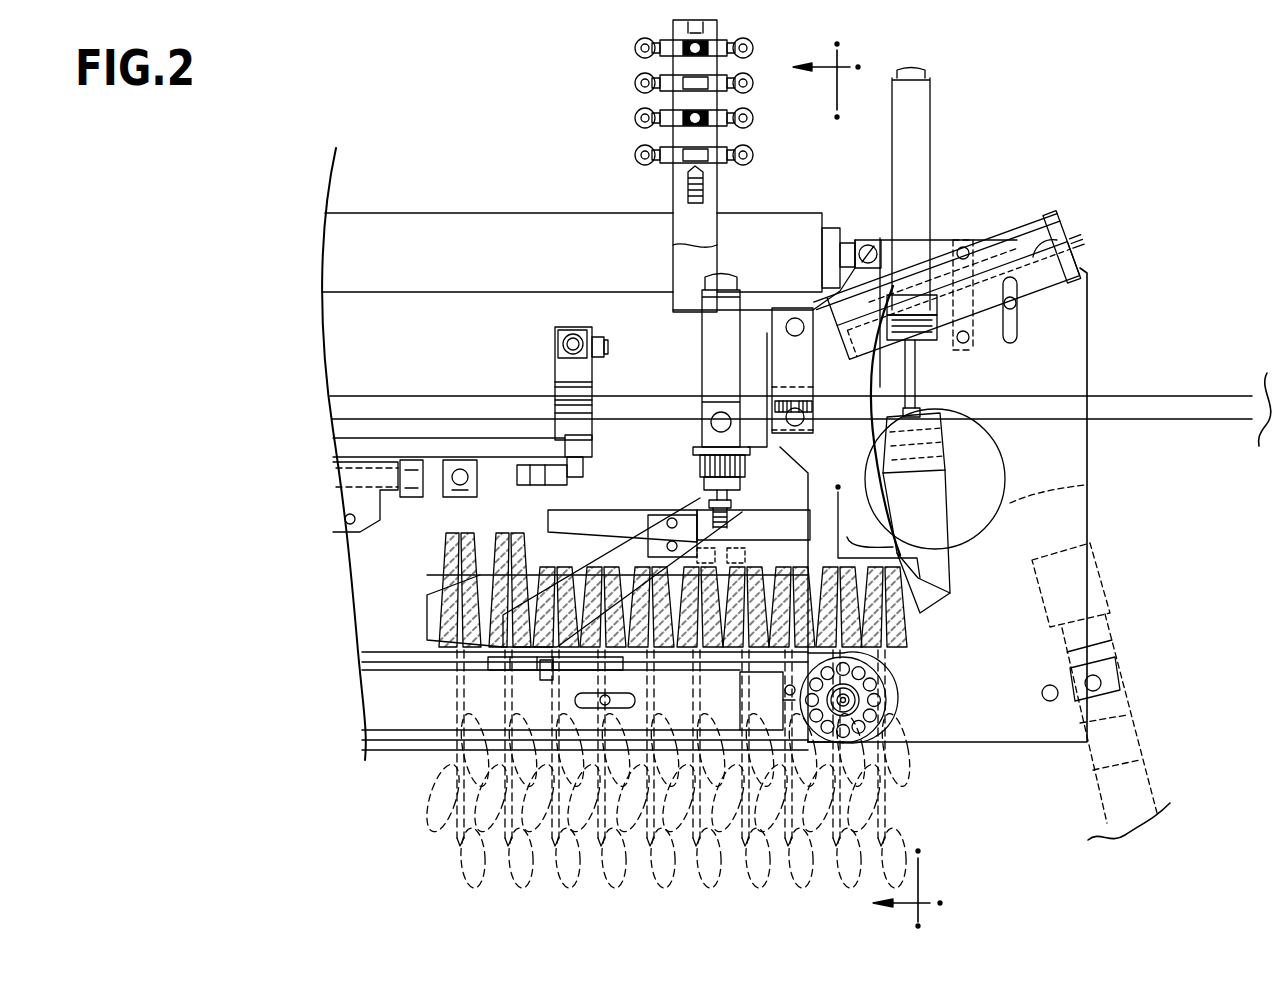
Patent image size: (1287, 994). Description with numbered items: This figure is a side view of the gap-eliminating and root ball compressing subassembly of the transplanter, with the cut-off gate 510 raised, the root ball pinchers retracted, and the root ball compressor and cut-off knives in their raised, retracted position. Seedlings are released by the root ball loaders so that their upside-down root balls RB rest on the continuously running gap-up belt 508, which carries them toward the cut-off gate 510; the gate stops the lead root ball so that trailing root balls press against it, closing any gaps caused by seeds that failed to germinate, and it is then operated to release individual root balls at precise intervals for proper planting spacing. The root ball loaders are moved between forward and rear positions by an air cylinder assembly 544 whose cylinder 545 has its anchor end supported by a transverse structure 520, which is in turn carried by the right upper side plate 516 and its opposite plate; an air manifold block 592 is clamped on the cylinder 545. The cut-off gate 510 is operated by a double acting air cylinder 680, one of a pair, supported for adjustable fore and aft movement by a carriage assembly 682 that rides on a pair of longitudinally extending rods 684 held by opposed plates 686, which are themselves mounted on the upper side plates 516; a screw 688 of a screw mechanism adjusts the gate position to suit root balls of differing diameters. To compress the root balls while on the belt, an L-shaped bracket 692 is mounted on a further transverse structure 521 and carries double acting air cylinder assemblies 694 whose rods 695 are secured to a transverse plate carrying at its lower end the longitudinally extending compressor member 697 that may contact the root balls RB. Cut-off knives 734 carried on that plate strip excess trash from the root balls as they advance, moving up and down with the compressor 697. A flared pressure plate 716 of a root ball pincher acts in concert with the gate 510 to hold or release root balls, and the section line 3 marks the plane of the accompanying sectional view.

The section line 3- 3 is at (880, 480).
The air cylinder assembly 544 is at (475, 178).
The air manifold block 592 is at (681, 28).
The cylinder 545 is at (750, 226).
The transverse structure 520 is at (866, 238).
The double acting air cylinder 680 is at (920, 98).
The carriage assembly 682 is at (973, 213).
The longitudinally extending rods 684 is at (1035, 257).
The screw 688 is at (1075, 242).
The opposed plates 686 is at (1068, 272).
The right upper side plate 516 is at (1070, 337).
The double acting air cylinder assemblies 694 is at (718, 366).
The rods 695 is at (722, 488).
The L-shaped bracket 692 is at (763, 458).
The further transverse structure 521 is at (787, 388).
The longitudinally extending member 697 is at (607, 522).
The flared pressure plate 716 is at (768, 582).
The cut-off knives 734 is at (617, 558).
The root balls RB is at (507, 540).
The gap-up belt 508 is at (392, 652).
The cut-off gate 510 is at (925, 497).